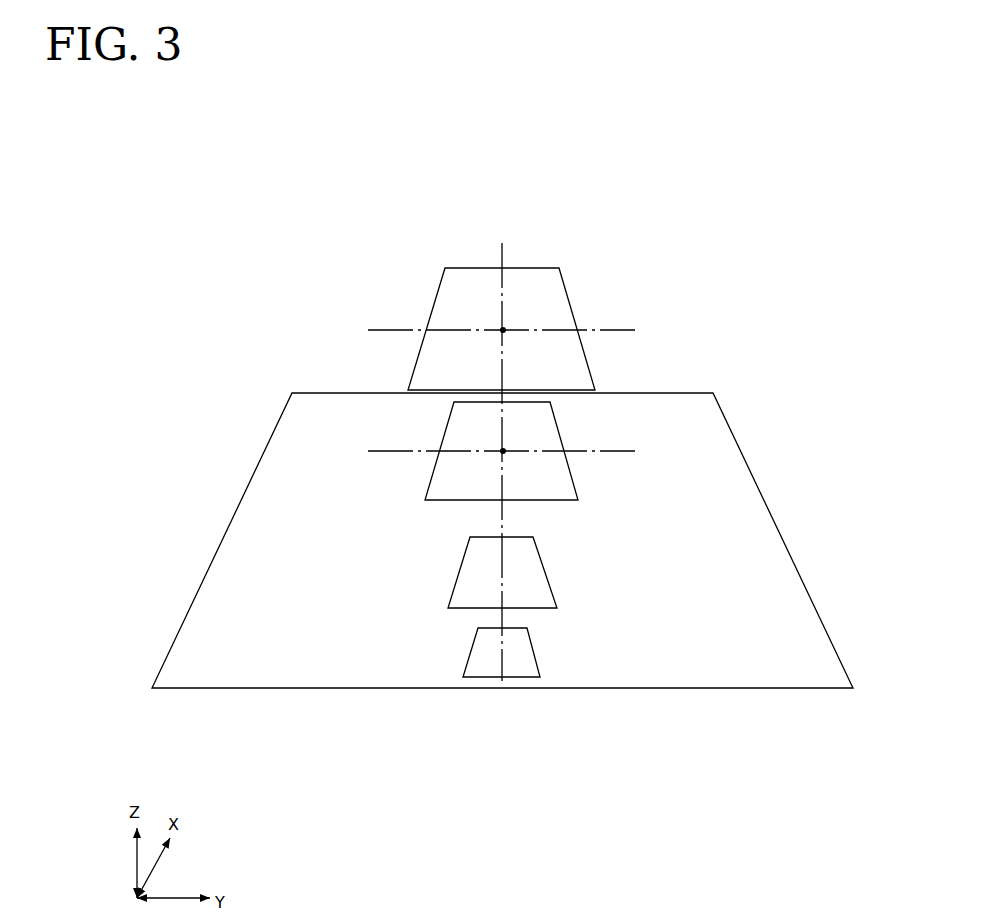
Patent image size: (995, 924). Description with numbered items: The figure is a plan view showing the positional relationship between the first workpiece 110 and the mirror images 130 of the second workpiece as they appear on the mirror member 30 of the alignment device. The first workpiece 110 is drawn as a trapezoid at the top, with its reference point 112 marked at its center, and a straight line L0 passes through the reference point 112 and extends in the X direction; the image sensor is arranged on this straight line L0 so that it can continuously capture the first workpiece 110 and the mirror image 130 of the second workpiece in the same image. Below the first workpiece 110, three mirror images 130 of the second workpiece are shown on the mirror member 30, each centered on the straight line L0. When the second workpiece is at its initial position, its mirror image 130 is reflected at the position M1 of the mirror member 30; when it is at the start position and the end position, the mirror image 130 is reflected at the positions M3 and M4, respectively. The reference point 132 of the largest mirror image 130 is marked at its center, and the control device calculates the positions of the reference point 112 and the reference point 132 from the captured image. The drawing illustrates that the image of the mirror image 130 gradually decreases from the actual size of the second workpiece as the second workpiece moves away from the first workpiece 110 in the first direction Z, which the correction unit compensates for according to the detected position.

The mirror member 30 is at (765, 498).
The first workpiece 110 is at (540, 267).
The reference point 112 is at (503, 330).
The mirror image 130 is at (503, 540).
The reference point 132 is at (503, 451).
The straight line L0 is at (499, 450).
The position M1 is at (557, 653).
The position M3 is at (575, 580).
The position M4 is at (408, 499).